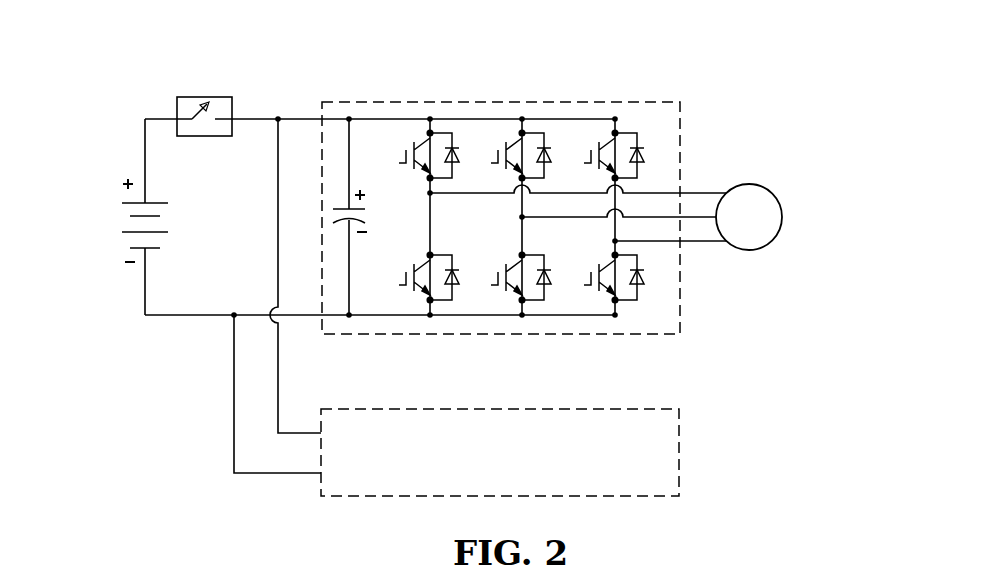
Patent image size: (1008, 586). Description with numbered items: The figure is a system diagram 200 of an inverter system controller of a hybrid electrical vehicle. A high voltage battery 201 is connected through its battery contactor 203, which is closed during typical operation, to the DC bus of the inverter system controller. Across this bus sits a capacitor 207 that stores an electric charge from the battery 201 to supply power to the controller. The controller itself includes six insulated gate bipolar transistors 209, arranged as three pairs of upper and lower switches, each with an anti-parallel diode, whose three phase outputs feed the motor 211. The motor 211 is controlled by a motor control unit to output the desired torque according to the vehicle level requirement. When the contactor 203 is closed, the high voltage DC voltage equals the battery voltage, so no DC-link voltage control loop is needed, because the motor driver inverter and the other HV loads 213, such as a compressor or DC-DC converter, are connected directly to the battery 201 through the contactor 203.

The system diagram 200 is at (684, 51).
The high voltage battery 201 is at (123, 234).
The battery contactor 203 is at (197, 114).
The capacitor 207 is at (323, 212).
The insulated gate bipolar transistors 209 is at (454, 147).
The motor 211 is at (783, 217).
The other HV loads 213 is at (679, 450).